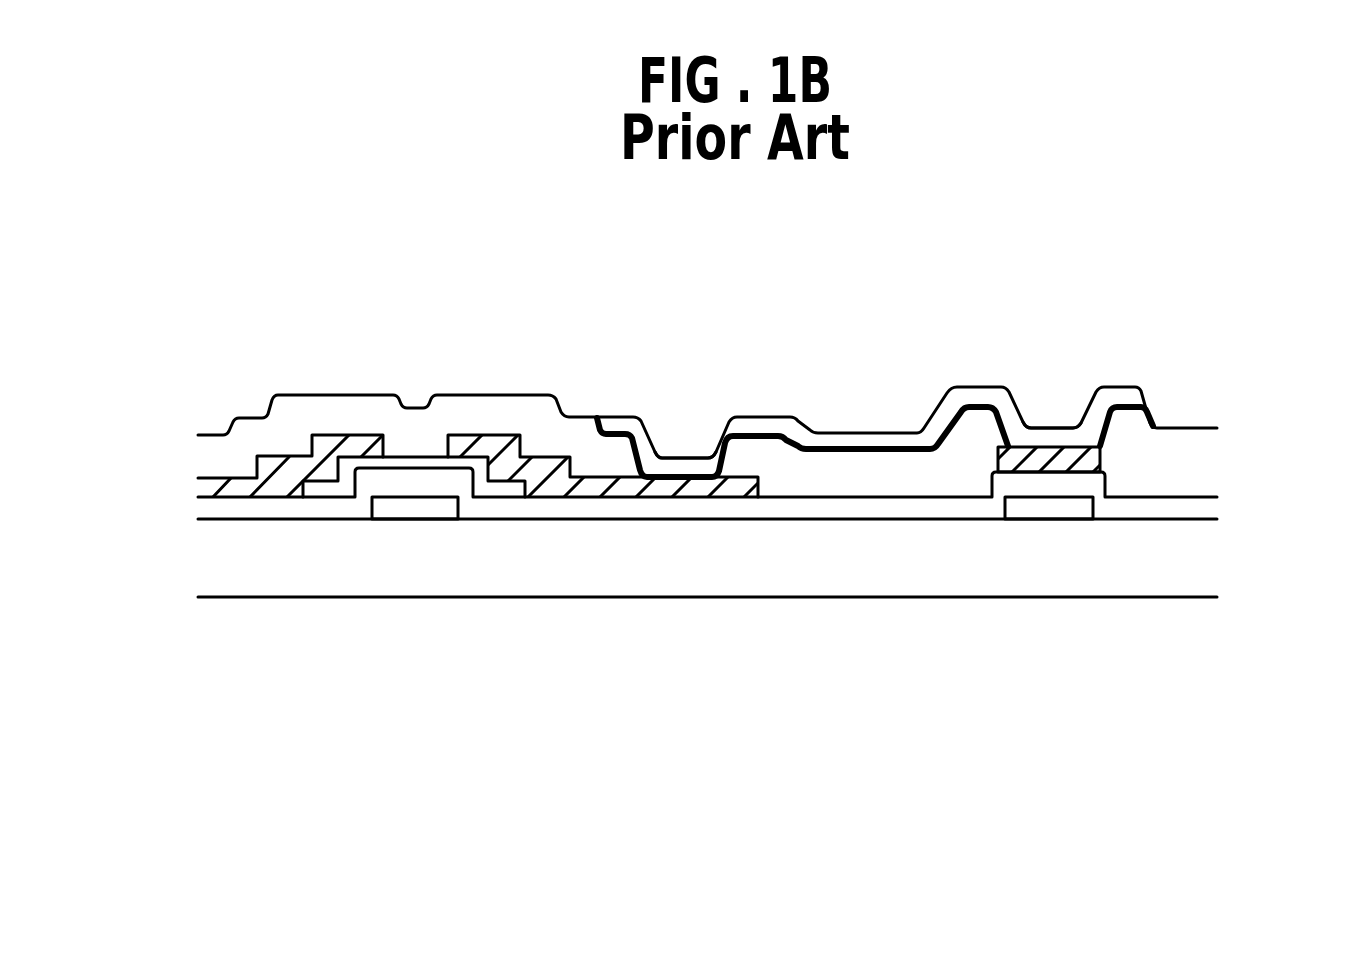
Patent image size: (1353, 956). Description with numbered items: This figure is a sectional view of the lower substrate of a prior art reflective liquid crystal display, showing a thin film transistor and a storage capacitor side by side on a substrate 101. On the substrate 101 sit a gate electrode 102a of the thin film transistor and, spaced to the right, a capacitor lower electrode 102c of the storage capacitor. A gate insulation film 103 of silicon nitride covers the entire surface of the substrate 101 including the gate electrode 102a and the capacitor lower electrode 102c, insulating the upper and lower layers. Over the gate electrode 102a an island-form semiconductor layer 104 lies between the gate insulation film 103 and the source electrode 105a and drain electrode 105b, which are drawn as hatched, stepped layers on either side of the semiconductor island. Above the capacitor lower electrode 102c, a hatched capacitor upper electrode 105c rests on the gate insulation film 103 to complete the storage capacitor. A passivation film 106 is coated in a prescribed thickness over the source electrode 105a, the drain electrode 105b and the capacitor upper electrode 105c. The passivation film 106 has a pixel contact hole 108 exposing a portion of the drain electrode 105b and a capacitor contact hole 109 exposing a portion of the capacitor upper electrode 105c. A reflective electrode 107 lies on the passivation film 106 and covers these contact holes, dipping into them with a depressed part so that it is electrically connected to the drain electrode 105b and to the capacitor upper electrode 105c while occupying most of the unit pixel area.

The substrate 101 is at (1192, 562).
The gate electrode 102a is at (413, 507).
The capacitor lower electrode 102c is at (1045, 509).
The gate insulation film 103 is at (873, 508).
The semiconductor layer 104 is at (356, 462).
The source electrode 105a is at (213, 488).
The drain electrode 105b is at (666, 486).
The capacitor upper electrode 105c is at (1025, 447).
The passivation film 106 is at (858, 466).
The reflective electrode 107 is at (777, 425).
The pixel contact hole 108 is at (686, 424).
The capacitor contact hole 109 is at (1055, 408).